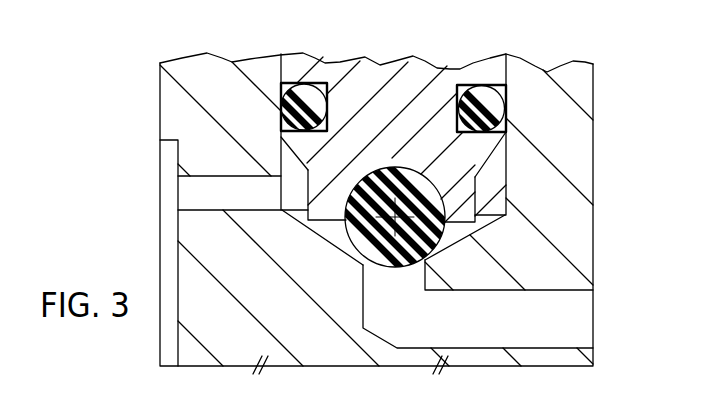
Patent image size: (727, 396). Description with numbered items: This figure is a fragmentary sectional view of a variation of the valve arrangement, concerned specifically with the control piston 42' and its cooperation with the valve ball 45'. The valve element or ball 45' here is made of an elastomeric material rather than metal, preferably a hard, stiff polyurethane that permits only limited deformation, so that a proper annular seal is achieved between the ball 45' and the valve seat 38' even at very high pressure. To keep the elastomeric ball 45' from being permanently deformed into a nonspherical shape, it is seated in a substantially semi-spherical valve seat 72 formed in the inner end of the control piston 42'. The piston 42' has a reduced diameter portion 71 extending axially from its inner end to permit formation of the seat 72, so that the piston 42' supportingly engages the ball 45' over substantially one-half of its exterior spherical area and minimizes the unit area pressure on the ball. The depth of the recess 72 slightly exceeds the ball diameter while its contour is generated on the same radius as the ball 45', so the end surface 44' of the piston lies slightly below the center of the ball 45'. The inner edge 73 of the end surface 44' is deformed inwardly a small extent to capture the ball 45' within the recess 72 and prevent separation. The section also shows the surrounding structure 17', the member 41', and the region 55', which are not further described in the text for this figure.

The housing 17' is at (409, 213).
The retaining ring 41' is at (210, 189).
The control piston 42' is at (394, 116).
The clearance gap 55' is at (286, 194).
The reduced diameter portion 71 is at (456, 192).
The valve seat 72 is at (405, 168).
The end surface 44' is at (322, 248).
The valve ball 45' is at (478, 303).
The inner edge 73 is at (449, 231).
The valve seat 38' is at (483, 239).